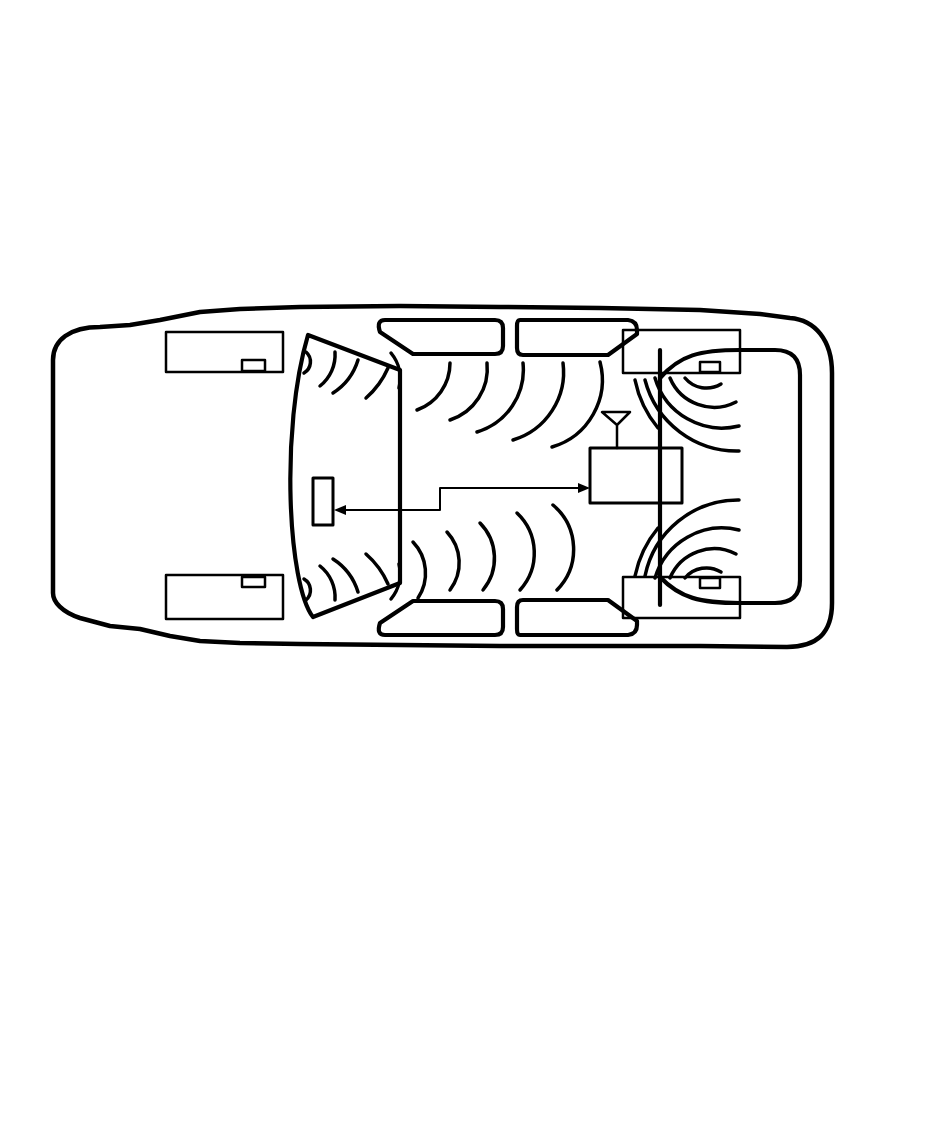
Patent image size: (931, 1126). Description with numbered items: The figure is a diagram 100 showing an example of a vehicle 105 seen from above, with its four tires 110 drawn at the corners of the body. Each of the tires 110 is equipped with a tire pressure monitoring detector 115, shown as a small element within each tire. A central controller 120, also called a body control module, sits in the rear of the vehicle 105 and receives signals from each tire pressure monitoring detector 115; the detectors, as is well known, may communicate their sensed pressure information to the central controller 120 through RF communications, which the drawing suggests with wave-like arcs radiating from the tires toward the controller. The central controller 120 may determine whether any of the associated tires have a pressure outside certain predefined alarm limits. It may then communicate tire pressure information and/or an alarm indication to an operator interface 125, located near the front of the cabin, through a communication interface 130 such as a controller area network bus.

The diagram 100 is at (703, 82).
The vehicle 105 is at (578, 649).
The tires 110 is at (240, 332).
The tire pressure monitoring detector 115 is at (253, 360).
The central controller 120 is at (590, 452).
The operator interface 125 is at (328, 478).
The communication interface 130 is at (447, 484).